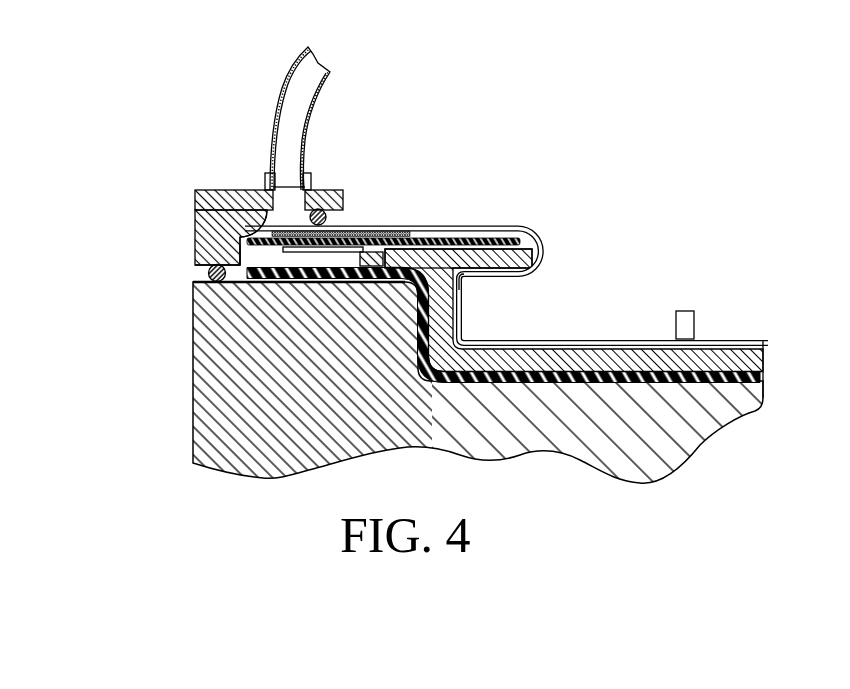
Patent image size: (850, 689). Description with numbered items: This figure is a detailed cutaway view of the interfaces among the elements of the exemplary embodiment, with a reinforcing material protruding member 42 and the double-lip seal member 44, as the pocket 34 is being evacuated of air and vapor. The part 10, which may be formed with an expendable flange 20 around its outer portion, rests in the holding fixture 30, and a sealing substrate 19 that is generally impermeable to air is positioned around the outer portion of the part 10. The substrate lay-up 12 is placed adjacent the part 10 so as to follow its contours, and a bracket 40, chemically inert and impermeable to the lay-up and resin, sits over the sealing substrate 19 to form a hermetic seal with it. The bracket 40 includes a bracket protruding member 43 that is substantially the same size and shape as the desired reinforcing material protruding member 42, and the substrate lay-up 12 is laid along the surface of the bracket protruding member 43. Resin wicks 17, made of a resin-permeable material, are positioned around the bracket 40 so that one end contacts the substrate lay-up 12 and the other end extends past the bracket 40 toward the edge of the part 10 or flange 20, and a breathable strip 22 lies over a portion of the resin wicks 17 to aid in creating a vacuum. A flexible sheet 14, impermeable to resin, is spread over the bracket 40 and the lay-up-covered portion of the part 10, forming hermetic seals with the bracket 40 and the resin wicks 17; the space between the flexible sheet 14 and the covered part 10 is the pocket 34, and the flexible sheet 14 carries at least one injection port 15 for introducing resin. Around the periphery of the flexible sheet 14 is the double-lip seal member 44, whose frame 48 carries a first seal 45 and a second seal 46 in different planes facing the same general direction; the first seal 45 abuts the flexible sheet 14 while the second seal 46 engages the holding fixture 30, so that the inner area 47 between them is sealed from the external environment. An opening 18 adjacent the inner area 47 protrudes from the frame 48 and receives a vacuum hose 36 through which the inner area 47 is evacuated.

The part 10 is at (764, 372).
The substrate lay-up 12 is at (573, 352).
The flexible sheet 14 is at (547, 238).
The injection port 15 is at (696, 322).
The resin wick 17 is at (197, 252).
The opening 18 is at (268, 180).
The sealing substrate 19 is at (352, 256).
The flange 20 is at (258, 263).
The breathable strip 22 is at (357, 232).
The holding fixture 30 is at (327, 395).
The pocket 34 is at (461, 282).
The vacuum hose 36 is at (308, 120).
The bracket 40 is at (318, 268).
The reinforcing material protruding member 42 is at (492, 264).
The bracket protruding member 43 is at (497, 238).
The double-lip seal member 44 is at (350, 181).
The first seal 45 is at (343, 212).
The second seal 46 is at (207, 270).
The inner area 47 is at (195, 207).
The frame 48 is at (208, 222).